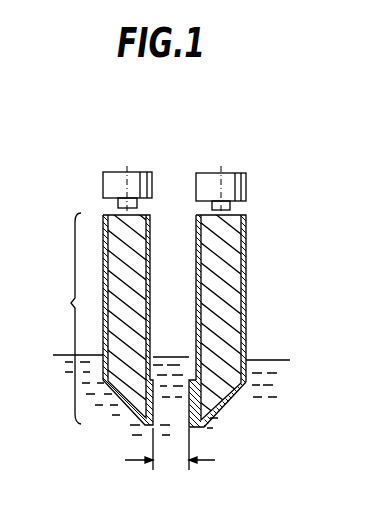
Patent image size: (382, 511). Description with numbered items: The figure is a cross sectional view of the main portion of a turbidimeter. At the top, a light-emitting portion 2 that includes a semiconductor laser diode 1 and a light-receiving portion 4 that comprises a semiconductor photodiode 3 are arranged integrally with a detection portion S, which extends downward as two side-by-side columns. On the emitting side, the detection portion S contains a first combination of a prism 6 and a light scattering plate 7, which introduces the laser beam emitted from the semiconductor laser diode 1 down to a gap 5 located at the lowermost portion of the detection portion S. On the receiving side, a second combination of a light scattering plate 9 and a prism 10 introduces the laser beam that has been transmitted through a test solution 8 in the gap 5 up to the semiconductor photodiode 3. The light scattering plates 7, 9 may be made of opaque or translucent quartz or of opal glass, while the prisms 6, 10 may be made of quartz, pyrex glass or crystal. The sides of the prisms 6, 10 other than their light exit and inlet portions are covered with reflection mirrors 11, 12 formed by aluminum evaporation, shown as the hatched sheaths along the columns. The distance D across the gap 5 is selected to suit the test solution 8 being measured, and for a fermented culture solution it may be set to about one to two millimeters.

The semiconductor laser diode 1 is at (118, 203).
The light-emitting portion 2 is at (106, 179).
The semiconductor photodiode 3 is at (231, 207).
The light-receiving portion 4 is at (246, 186).
The gap 5 is at (187, 430).
The prism 6 is at (135, 313).
The light scattering plate 7 is at (137, 417).
The test solution 8 is at (273, 368).
The light scattering plate 9 is at (223, 411).
The prism 10 is at (236, 322).
The reflection mirror 11 is at (151, 245).
The reflection mirror 12 is at (247, 251).
The detection portion S is at (65, 318).
The distance D is at (170, 456).